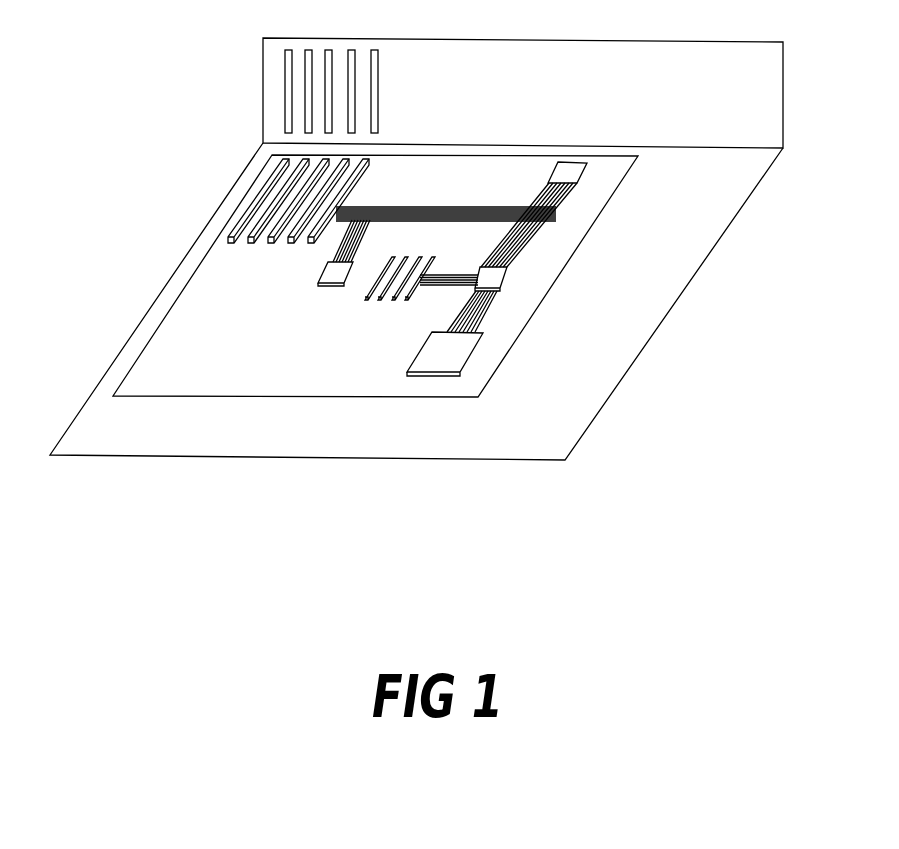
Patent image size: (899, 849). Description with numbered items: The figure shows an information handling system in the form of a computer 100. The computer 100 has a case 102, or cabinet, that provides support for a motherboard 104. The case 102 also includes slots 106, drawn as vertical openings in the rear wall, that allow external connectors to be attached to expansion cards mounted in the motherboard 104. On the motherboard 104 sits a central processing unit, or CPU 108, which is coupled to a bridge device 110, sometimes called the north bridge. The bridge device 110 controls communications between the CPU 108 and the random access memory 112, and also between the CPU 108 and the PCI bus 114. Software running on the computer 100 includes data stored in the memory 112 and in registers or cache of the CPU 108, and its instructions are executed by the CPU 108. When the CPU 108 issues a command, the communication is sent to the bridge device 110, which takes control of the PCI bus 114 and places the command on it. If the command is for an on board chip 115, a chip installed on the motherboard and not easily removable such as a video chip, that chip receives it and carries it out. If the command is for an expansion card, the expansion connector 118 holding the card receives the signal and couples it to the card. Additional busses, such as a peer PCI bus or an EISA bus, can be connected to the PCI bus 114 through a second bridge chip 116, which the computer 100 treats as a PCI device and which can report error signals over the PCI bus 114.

The computer 100 is at (131, 41).
The case 102 is at (783, 42).
The motherboard 104 is at (143, 350).
The slots 106 is at (288, 52).
The central processing unit 108 is at (474, 352).
The bridge device 110 is at (507, 277).
The random access memory 112 is at (377, 305).
The PCI bus 114 is at (412, 207).
The on board chip 115 is at (327, 283).
The second bridge chip 116 is at (587, 165).
The expansion connector 118 is at (229, 244).